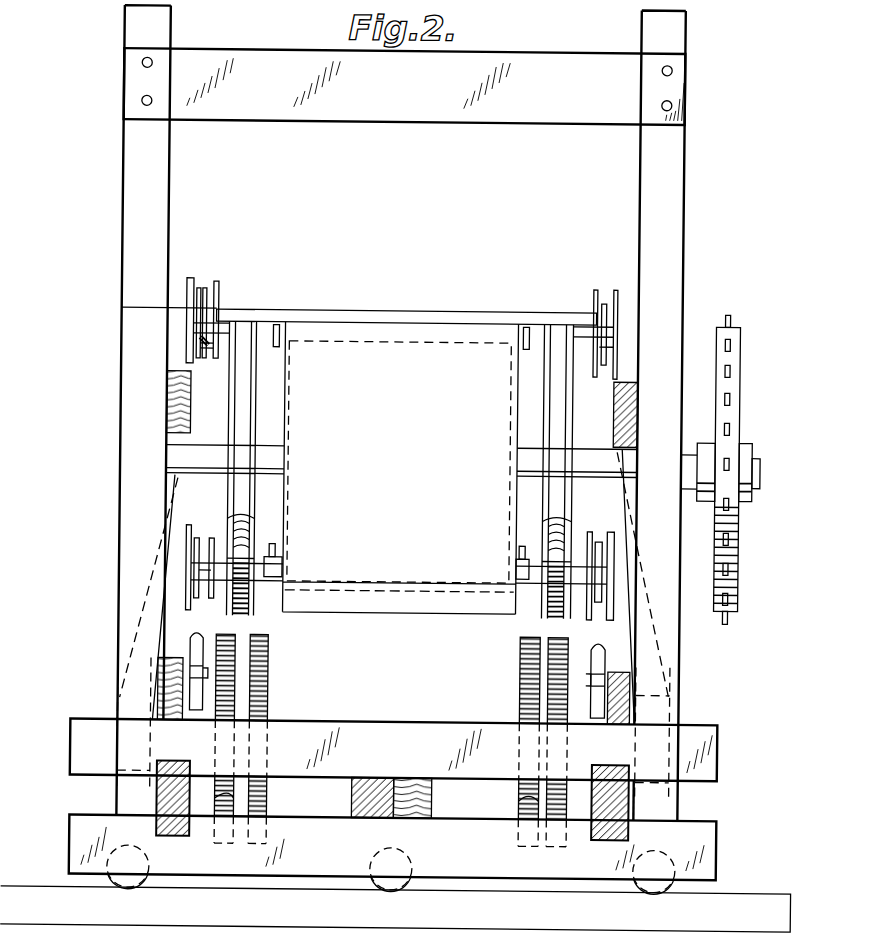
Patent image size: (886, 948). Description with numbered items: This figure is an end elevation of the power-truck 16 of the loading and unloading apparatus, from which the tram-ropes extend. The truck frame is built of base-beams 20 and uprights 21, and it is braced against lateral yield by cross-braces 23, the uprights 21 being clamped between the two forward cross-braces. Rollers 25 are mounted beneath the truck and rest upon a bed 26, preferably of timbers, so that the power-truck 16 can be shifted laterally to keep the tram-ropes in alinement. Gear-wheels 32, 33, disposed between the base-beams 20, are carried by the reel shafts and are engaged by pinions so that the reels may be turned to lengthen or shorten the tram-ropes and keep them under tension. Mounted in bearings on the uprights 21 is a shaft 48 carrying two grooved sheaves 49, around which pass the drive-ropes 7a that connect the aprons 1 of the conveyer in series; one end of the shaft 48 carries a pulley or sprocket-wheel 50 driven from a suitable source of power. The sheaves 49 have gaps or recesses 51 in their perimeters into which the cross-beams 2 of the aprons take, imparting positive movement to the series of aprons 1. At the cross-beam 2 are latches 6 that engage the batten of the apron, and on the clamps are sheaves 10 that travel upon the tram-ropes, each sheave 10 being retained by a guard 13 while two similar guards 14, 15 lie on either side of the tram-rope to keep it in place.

The apron 1 is at (399, 462).
The cross-beam 2 is at (356, 322).
The latch 6 is at (286, 326).
The drive-rope 7a is at (393, 670).
The sheave 10 is at (185, 310).
The guard 13 is at (191, 292).
The guard 14 is at (206, 346).
The guard 15 is at (217, 300).
The power-truck 16 is at (404, 134).
The base-beam 20 is at (199, 772).
The upright 21 is at (681, 230).
The cross-brace 23 is at (393, 800).
The roller 25 is at (137, 885).
The bed 26 is at (395, 909).
The gear-wheel 32 is at (226, 806).
The gear-wheel 33 is at (270, 678).
The shaft 48 is at (195, 456).
The grooved sheave 49 is at (240, 497).
The sprocket-wheel 50 is at (735, 410).
The recess 51 is at (242, 550).